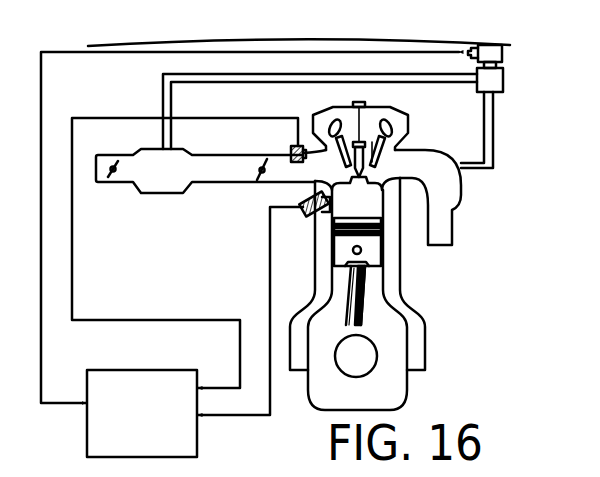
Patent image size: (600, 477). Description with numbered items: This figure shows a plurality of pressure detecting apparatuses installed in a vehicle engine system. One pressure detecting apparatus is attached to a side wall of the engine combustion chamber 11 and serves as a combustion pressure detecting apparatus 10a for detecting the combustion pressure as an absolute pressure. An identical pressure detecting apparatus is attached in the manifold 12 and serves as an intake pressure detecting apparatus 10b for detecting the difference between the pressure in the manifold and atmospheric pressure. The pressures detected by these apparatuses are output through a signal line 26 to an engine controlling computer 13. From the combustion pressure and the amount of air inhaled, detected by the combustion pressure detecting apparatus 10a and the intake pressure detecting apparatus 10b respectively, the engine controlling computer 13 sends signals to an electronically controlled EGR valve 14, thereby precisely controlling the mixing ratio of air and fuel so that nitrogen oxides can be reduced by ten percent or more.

The combustion pressure detecting apparatus 10a is at (310, 215).
The intake pressure detecting apparatus 10b is at (291, 163).
The engine combustion chamber 11 is at (372, 204).
The manifold 12 is at (250, 163).
The engine controlling computer 13 is at (167, 440).
The electronically controlled EGR valve 14 is at (488, 45).
The signal line 26 is at (268, 303).